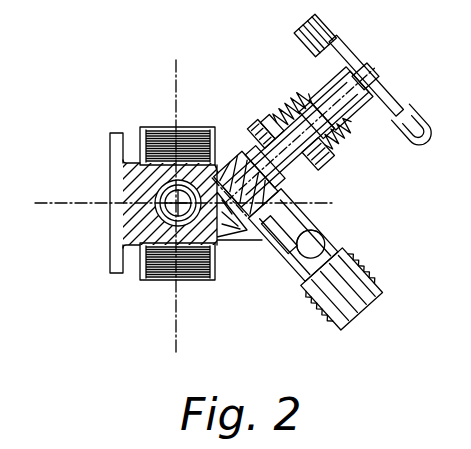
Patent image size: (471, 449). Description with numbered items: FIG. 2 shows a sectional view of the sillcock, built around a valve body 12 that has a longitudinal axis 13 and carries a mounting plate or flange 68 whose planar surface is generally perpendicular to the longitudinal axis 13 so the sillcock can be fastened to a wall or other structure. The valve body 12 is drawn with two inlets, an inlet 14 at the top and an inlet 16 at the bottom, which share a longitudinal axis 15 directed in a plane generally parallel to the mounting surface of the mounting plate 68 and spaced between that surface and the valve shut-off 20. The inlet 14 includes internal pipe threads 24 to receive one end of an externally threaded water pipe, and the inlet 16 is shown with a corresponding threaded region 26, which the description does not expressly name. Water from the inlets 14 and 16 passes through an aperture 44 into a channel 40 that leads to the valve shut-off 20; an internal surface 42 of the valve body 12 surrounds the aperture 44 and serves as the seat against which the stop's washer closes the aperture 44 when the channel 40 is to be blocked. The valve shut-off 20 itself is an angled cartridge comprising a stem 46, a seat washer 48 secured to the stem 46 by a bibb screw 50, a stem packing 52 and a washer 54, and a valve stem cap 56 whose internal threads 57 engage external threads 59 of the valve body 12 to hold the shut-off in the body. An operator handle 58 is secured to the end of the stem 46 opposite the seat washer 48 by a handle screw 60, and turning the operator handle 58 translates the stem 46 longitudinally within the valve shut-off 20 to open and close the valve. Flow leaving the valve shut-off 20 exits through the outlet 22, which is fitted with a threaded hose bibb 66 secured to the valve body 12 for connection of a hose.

The valve body 12 is at (123, 231).
The longitudinal axis 13 is at (55, 202).
The inlet 14 is at (153, 127).
The longitudinal axis 15 is at (177, 350).
The inlet 16 is at (157, 282).
The valve shut-off 20 is at (172, 38).
The outlet 22 is at (295, 292).
The internal pipe threads 24 is at (167, 128).
The second threads 26 is at (168, 282).
The channel 40 is at (237, 240).
The internal surface 42 is at (162, 187).
The aperture 44 is at (157, 197).
The stem 46 is at (265, 132).
The seat washer 48 is at (267, 213).
The bibb screw 50 is at (263, 215).
The stem packing 52 is at (330, 160).
The washer 54 is at (330, 172).
The valve stem cap 56 is at (292, 108).
The internal threads 57 is at (262, 112).
The operator handle 58 is at (318, 35).
The external threads 59 is at (272, 130).
The handle screw 60 is at (368, 74).
The threaded hose bibb 66 is at (375, 262).
The mounting plate or flange 68 is at (117, 133).